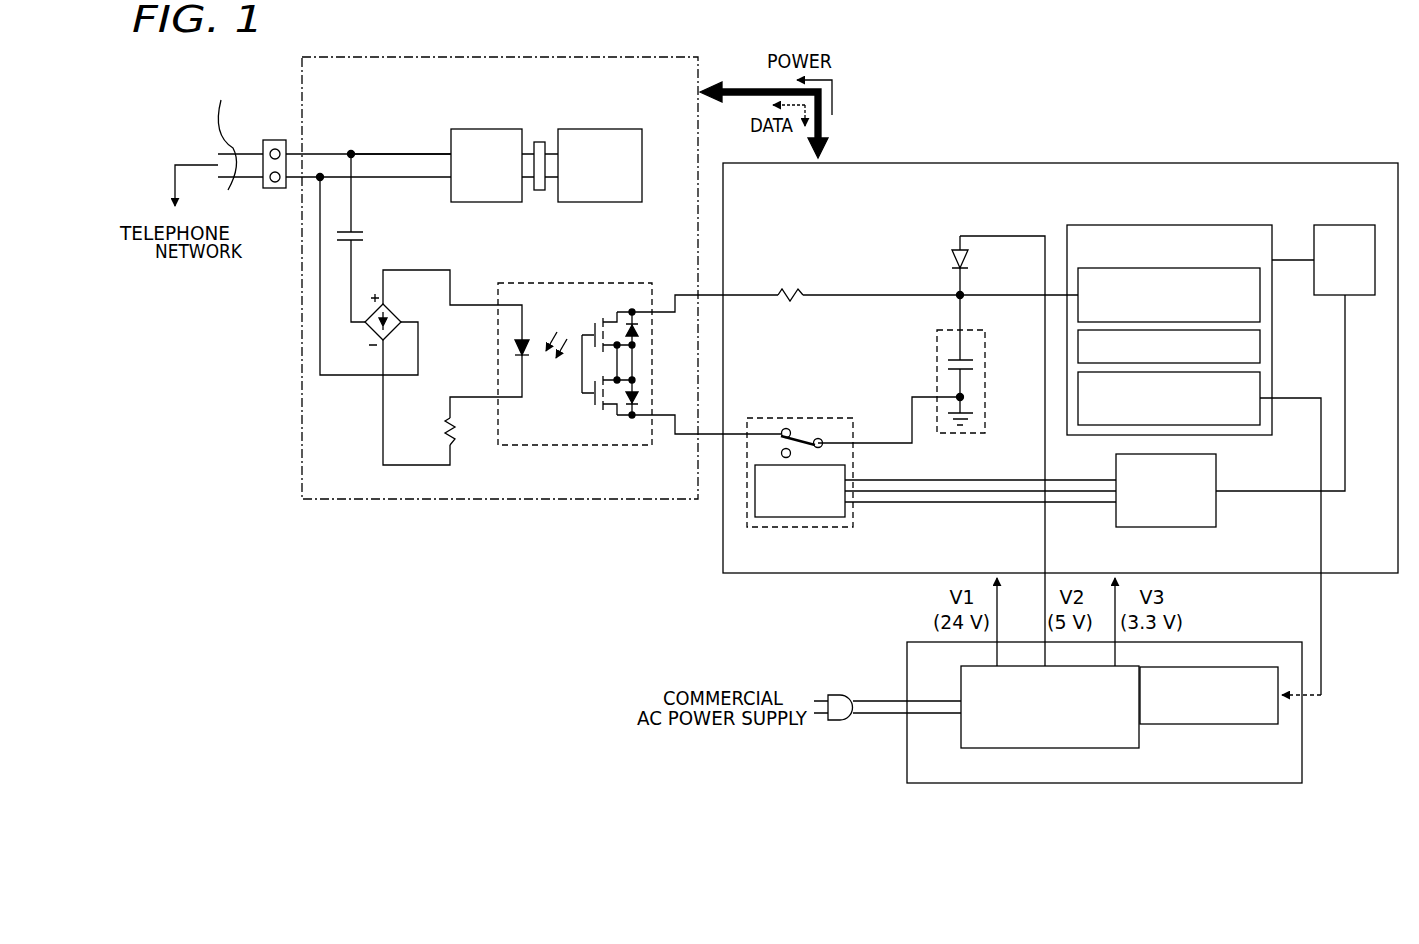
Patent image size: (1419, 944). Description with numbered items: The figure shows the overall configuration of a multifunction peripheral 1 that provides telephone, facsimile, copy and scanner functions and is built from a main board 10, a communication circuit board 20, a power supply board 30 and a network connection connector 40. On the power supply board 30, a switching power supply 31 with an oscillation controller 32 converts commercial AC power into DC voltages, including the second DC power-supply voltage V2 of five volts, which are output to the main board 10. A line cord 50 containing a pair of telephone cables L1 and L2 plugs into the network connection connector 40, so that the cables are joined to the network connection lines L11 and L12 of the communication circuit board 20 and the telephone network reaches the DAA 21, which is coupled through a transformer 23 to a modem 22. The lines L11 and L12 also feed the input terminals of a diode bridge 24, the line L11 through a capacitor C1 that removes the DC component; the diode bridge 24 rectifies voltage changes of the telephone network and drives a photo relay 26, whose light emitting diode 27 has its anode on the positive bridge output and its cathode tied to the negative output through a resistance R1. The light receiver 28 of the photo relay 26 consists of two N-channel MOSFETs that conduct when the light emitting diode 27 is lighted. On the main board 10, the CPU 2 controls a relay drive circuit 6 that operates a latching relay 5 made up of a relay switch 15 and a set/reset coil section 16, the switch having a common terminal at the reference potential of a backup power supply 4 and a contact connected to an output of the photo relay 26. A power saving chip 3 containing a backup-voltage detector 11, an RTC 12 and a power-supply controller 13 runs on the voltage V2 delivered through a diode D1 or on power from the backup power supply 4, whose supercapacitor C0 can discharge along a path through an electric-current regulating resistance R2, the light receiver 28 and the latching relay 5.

The multifunction peripheral 1 is at (1224, 97).
The CPU 2 is at (1350, 225).
The power saving chip 3 is at (1236, 225).
The backup power supply 4 is at (986, 415).
The latching relay 5 is at (855, 425).
The relay drive circuit 6 is at (1218, 476).
The main board 10 is at (1105, 163).
The backup-voltage detector 11 is at (1262, 297).
The RTC 12 is at (1262, 346).
The power-supply controller 13 is at (1262, 388).
The relay switch 15 is at (805, 434).
The set/reset coil section 16 is at (800, 528).
The communication circuit board 20 is at (624, 57).
The DAA 21 is at (490, 129).
The modem 22 is at (612, 129).
The transformer 23 is at (540, 141).
The diode bridge 24 is at (394, 312).
The photo relay 26 is at (630, 283).
The light emitting diode 27 is at (512, 348).
The light receiver 28 is at (583, 314).
The power supply board 30 is at (907, 770).
The switching power supply 31 is at (961, 688).
The oscillation controller 32 is at (1210, 727).
The network connection connector 40 is at (275, 139).
The line cord 50 is at (217, 134).
The telephone cable L1 is at (245, 150).
The telephone cable L2 is at (246, 184).
The network connection line L11 is at (340, 153).
The network connection line L12 is at (424, 180).
The capacitor C1 is at (364, 240).
The resistance R1 is at (443, 432).
The electric-current regulating resistance R2 is at (800, 292).
The diode D1 is at (950, 259).
The second DC power-supply voltage V2 is at (1002, 440).
The supercapacitor C0 is at (976, 366).